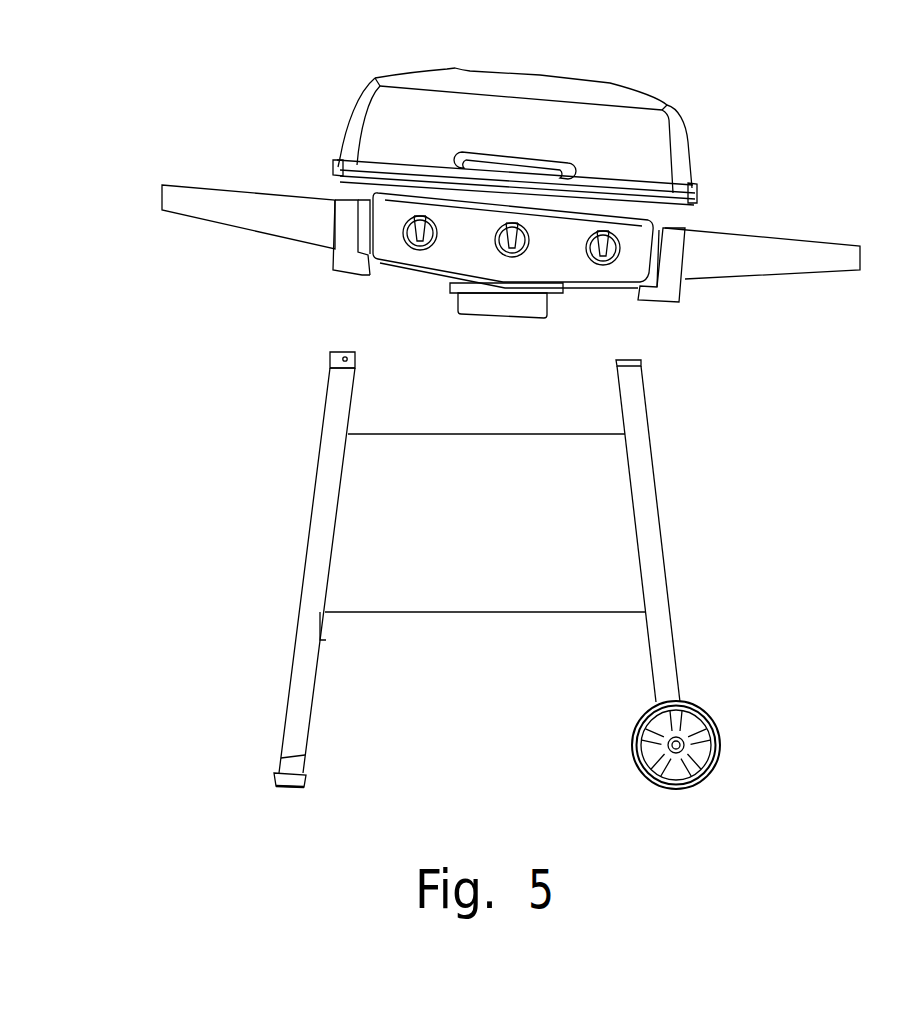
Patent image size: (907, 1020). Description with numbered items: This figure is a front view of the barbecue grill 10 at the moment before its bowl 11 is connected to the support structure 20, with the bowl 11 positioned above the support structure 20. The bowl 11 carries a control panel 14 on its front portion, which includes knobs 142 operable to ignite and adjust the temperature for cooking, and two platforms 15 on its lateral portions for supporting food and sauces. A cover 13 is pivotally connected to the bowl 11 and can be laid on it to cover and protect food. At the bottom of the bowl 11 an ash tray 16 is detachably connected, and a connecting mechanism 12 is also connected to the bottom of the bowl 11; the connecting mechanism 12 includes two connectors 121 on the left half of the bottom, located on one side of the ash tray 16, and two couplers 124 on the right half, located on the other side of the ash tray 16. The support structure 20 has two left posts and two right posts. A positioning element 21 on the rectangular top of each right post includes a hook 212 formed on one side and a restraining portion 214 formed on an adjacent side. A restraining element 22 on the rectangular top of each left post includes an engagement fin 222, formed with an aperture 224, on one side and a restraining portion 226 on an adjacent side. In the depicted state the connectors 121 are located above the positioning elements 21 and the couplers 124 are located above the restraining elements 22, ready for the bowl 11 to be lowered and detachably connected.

The barbecue grill 10 is at (684, 78).
The bowl 11 is at (668, 222).
The connecting mechanism 12 is at (303, 266).
The connector 121 is at (670, 288).
The coupler 124 is at (368, 264).
The cover 13 is at (566, 78).
The control panel 14 is at (370, 196).
The knob 142 is at (503, 246).
The platform 15 is at (186, 194).
The ash tray 16 is at (522, 306).
The support structure 20 is at (694, 537).
The positioning element 21 is at (788, 342).
The hook 212 is at (622, 361).
The restraining portion 214 is at (641, 362).
The restraining element 22 is at (157, 342).
The engagement fin 222 is at (330, 355).
The aperture 224 is at (353, 357).
The restraining portion 226 is at (343, 370).